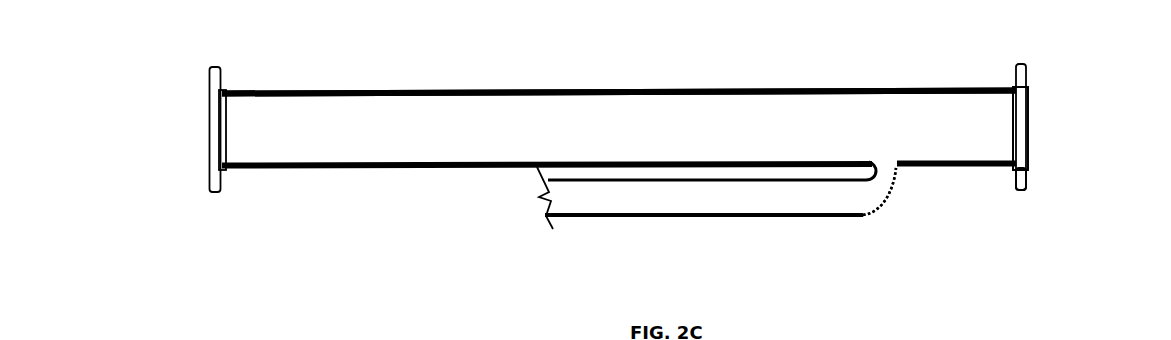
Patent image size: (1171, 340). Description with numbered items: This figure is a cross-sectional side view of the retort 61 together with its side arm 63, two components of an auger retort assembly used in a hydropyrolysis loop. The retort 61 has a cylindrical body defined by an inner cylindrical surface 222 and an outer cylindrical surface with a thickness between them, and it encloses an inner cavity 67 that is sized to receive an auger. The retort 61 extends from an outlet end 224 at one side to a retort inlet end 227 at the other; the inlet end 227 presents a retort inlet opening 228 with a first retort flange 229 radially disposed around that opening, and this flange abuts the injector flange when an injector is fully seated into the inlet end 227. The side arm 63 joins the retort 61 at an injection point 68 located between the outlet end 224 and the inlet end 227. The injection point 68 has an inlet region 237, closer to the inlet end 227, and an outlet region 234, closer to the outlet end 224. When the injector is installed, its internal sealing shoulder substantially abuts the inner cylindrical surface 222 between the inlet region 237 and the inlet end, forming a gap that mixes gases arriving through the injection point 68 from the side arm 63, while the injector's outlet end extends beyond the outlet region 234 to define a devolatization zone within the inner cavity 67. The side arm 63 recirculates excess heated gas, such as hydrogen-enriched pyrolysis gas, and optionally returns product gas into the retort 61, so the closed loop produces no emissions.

The retort 61 is at (509, 80).
The side arm 63 is at (750, 217).
The inner cavity 67 is at (685, 106).
The injection point 68 is at (897, 165).
The inner cylindrical surface 222 is at (300, 160).
The outlet end 224 is at (198, 124).
The retort inlet end 227 is at (1052, 109).
The retort inlet opening 228 is at (1028, 131).
The first retort flange 229 is at (1028, 183).
The outlet region 234 is at (861, 157).
The inlet region 237 is at (899, 164).